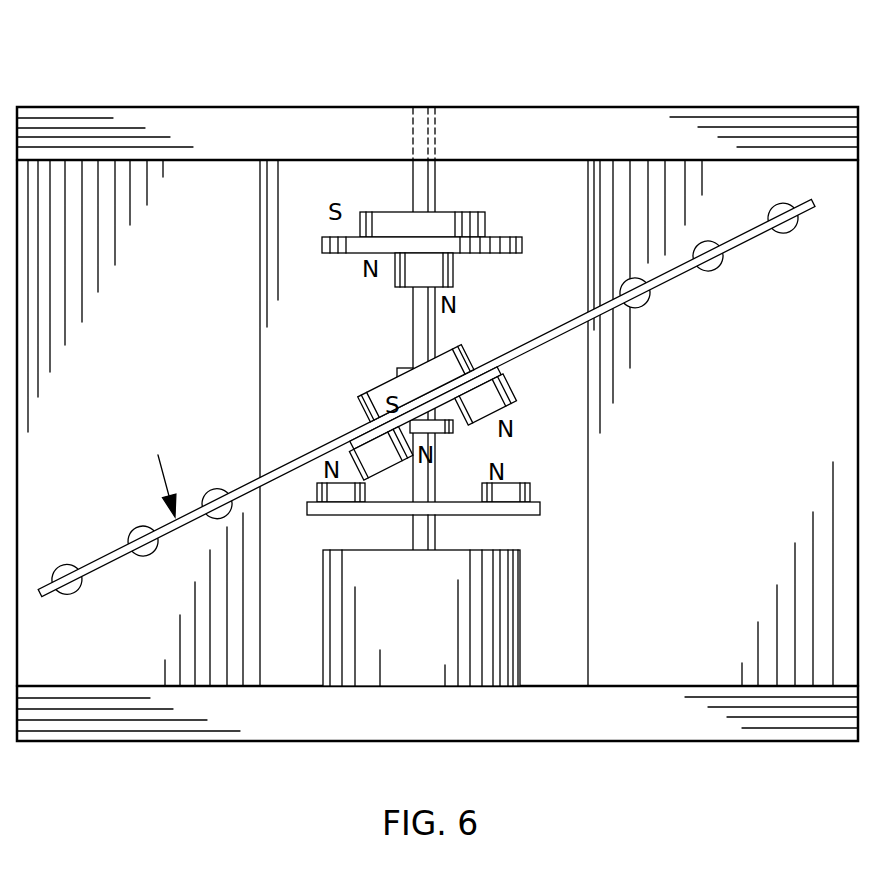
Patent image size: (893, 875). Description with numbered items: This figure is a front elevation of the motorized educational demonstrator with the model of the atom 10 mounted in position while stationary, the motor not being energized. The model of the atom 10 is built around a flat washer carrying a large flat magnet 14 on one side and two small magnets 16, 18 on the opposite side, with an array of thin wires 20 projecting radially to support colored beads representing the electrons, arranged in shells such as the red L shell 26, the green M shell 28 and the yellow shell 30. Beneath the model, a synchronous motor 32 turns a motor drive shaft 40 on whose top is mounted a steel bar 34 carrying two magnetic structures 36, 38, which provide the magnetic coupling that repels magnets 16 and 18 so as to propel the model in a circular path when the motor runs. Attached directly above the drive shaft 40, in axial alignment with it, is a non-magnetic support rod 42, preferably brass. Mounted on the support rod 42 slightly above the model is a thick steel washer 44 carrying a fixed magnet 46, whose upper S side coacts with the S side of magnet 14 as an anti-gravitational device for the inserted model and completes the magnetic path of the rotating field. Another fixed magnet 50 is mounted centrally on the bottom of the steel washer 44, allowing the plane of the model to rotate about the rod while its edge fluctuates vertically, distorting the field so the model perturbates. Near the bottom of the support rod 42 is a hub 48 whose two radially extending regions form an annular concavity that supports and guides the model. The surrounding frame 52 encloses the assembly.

The model of a theoretical atom 10 is at (157, 473).
The large flat magnet 14 is at (463, 353).
The small magnet 16 is at (400, 462).
The small magnet 18 is at (513, 392).
The thin wires 20 is at (100, 555).
The L shell 26 is at (213, 490).
The M shell 28 is at (148, 557).
The N shell 30 is at (77, 598).
The synchronous motor 32 is at (372, 612).
The steel bar 34 is at (540, 508).
The magnetic structure 36 is at (317, 490).
The magnetic structure 38 is at (527, 483).
The motor drive shaft 40 is at (437, 532).
The non-magnetic support rod 42 is at (437, 192).
The thick steel washer 44 is at (493, 255).
The fixed magnet 46 is at (385, 212).
The hub 48 is at (398, 373).
The fixed magnet 50 is at (397, 272).
The frame housing 52 is at (738, 185).